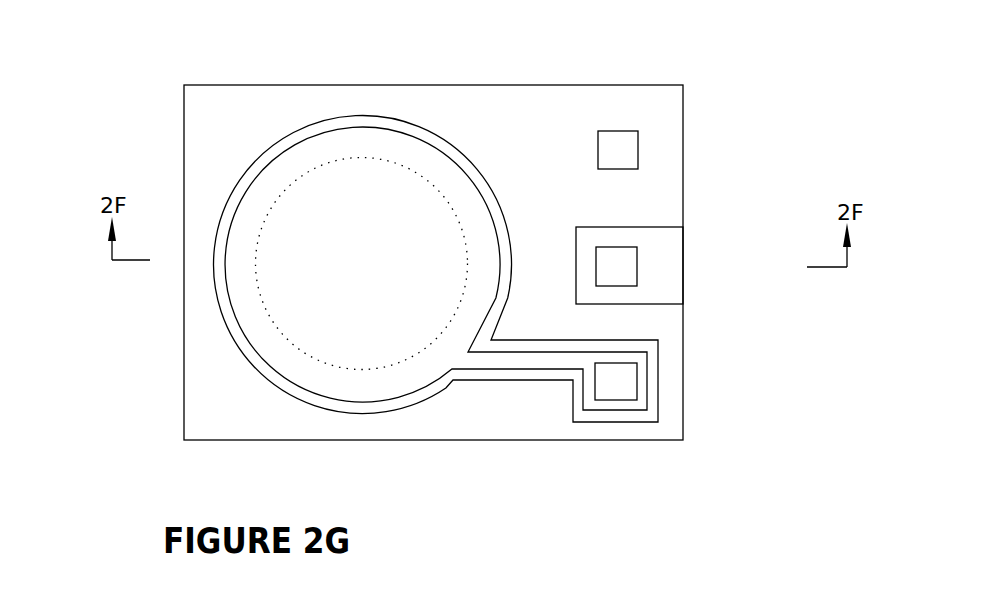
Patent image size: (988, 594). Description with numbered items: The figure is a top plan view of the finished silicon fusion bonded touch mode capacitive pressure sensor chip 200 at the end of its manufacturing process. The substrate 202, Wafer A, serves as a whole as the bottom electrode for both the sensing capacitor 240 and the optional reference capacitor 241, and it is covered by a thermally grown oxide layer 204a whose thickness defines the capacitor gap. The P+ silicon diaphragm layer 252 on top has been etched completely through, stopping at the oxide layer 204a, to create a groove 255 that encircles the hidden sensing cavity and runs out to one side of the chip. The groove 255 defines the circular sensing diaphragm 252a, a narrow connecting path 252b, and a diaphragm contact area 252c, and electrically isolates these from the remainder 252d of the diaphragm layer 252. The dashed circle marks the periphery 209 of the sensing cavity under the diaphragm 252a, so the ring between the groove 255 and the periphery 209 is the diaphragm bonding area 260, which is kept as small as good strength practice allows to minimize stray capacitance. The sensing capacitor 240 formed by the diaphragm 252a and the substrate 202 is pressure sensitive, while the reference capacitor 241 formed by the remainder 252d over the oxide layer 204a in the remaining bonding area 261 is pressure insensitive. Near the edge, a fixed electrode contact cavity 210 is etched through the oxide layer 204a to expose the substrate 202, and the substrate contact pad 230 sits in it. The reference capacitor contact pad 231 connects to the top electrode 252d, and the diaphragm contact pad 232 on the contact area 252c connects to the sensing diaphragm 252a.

The SFB TMCPS 200 is at (150, 93).
The substrate 202 is at (657, 288).
The oxide layer 204a is at (353, 120).
The periphery of the sensing cavity 209 is at (258, 293).
The fixed electrode contact cavity 210 is at (646, 228).
The substrate contact pad 230 is at (628, 262).
The reference capacitor contact pad 231 is at (639, 150).
The diaphragm contact pad 232 is at (637, 378).
The sensing capacitor 240 is at (403, 192).
The reference capacitor 241 is at (660, 122).
The diaphragm layer 252 is at (250, 452).
The sensing diaphragm 252a is at (358, 398).
The connecting path 252b is at (530, 369).
The diaphragm contact area 252c is at (613, 411).
The remainder of the diaphragm layer 252d is at (465, 440).
The groove 255 is at (311, 126).
The bonding area 260 is at (280, 353).
The remainder of the diaphragm layer bonding area 261 is at (582, 112).